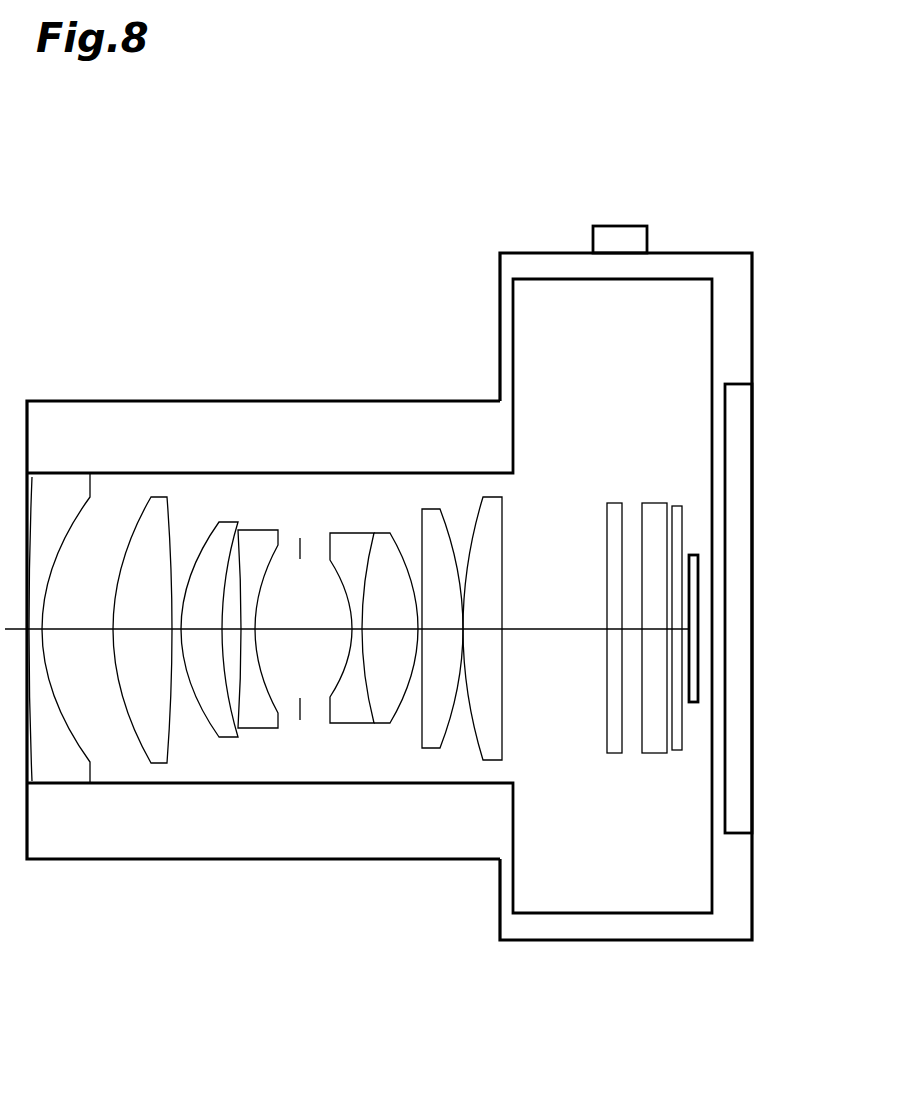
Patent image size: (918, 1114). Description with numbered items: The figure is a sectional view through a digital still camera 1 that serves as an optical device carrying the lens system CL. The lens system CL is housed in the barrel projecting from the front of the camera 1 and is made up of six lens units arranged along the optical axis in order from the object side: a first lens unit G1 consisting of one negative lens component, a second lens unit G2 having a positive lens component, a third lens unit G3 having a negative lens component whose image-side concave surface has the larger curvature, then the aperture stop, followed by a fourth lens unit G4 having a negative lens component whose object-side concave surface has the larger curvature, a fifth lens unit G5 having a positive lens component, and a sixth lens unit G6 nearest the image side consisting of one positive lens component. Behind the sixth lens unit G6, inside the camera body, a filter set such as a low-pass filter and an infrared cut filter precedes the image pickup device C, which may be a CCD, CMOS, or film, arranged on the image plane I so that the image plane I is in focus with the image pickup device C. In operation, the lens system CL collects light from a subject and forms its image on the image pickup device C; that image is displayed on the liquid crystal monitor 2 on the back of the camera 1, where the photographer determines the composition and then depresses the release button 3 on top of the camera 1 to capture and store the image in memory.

The digital still camera 1 is at (214, 288).
The liquid crystal monitor 2 is at (754, 523).
The release button 3 is at (623, 230).
The lens system CL is at (368, 770).
The image pickup device C is at (690, 702).
The image plane I is at (688, 550).
The first lens unit G1 is at (106, 457).
The second lens unit G2 is at (177, 457).
The third lens unit G3 is at (283, 457).
The fourth lens unit G4 is at (415, 457).
The fifth lens unit G5 is at (459, 457).
The sixth lens unit G6 is at (503, 457).